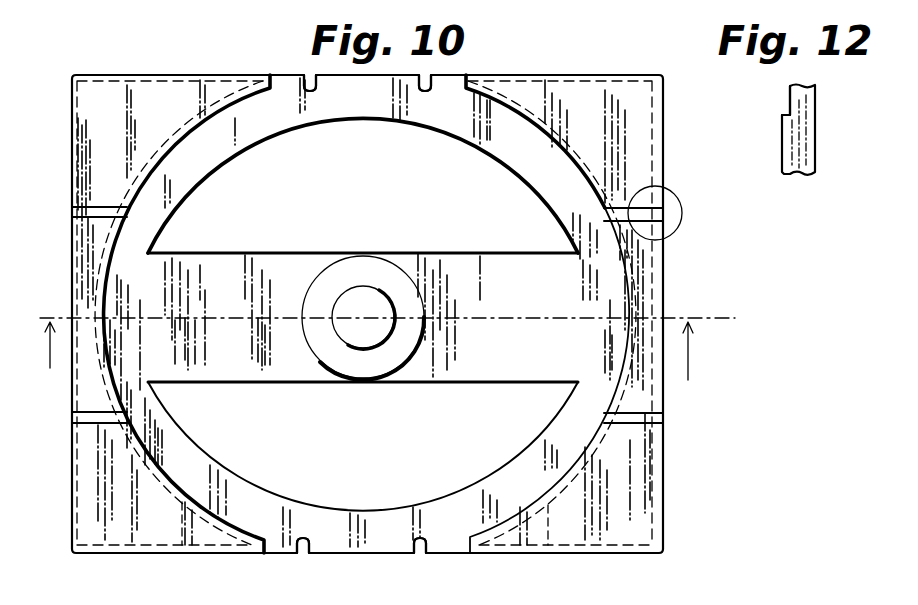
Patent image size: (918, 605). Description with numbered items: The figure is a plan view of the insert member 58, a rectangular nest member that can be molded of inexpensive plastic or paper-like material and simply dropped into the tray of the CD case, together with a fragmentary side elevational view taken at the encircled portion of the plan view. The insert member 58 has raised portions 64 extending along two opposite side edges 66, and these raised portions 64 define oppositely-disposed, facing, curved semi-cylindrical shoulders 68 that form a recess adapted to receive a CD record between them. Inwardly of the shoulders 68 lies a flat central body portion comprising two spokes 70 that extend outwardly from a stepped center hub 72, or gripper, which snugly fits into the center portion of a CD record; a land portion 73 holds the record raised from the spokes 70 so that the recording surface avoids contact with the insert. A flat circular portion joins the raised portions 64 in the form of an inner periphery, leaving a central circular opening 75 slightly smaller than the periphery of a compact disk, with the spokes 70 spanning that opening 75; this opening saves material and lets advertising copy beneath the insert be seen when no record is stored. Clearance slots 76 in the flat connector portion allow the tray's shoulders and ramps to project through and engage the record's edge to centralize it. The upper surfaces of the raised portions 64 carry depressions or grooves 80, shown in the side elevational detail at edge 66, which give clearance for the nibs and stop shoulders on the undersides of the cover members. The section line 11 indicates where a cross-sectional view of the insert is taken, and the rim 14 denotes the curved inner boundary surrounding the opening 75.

In FIG. 10, the insert member 58 is at (200, 62).
In FIG. 10, the clearance slots 76 is at (310, 82).
In FIG. 10, the shoulders 68 is at (180, 153).
In FIG. 10, the ring 14 is at (369, 121).
In FIG. 10, the central circular opening 75 is at (363, 319).
In FIG. 10, the spokes 70 is at (215, 268).
In FIG. 10, the center hub 72 is at (372, 305).
In FIG. 10, the land portion 73 is at (374, 364).
In FIG. 10, the section line 11 is at (385, 361).
In FIG. 10, the side edges 66 is at (66, 290).
In FIG. 12, the side edges 66 is at (810, 133).
In FIG. 10, the grooves 80 is at (72, 209).
In FIG. 12, the grooves 80 is at (787, 109).
In FIG. 10, the raised portions 64 is at (100, 138).